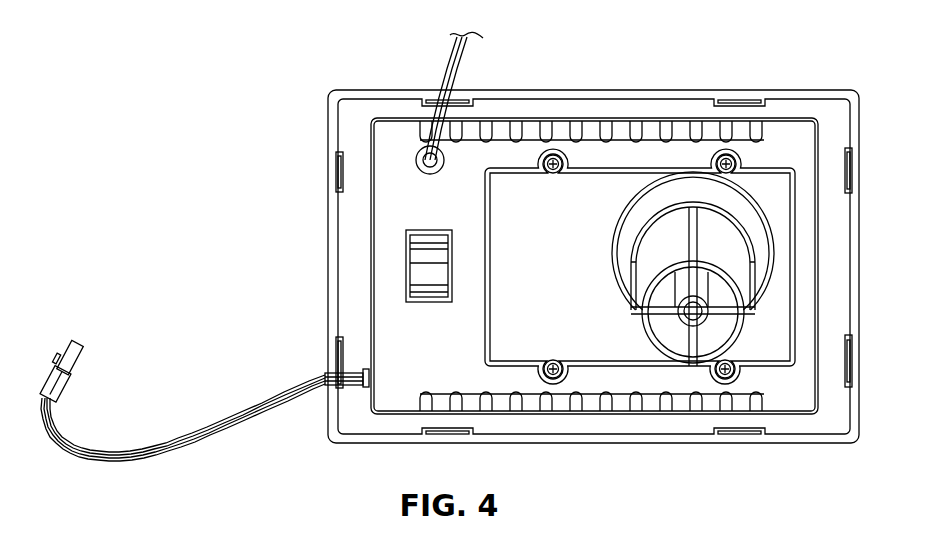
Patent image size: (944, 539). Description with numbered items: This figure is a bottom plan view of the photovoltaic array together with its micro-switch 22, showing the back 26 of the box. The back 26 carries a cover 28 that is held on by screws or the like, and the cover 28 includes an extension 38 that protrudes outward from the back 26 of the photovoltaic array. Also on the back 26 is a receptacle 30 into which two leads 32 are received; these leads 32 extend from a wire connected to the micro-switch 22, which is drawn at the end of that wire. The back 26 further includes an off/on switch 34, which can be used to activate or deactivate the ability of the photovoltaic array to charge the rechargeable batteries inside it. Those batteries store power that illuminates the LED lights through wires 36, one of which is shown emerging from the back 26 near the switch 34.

The micro-switch 22 is at (82, 338).
The back 26 is at (835, 358).
The cover 28 is at (780, 275).
The receptacle 30 is at (367, 388).
The leads 32 is at (350, 371).
The off/on switch 34 is at (418, 229).
The wires 36 is at (467, 72).
The extension 38 is at (675, 236).